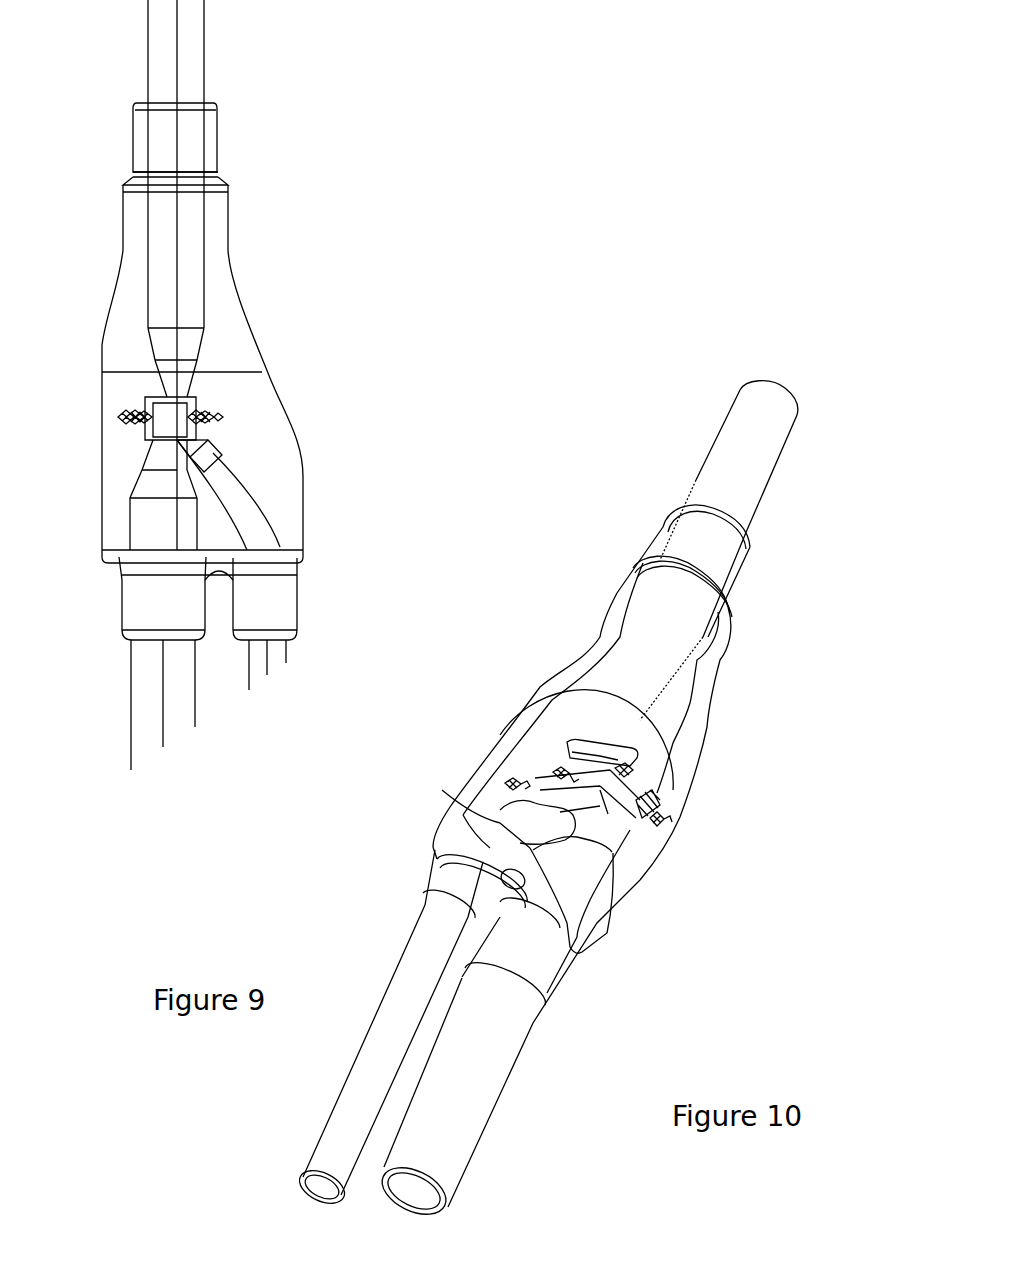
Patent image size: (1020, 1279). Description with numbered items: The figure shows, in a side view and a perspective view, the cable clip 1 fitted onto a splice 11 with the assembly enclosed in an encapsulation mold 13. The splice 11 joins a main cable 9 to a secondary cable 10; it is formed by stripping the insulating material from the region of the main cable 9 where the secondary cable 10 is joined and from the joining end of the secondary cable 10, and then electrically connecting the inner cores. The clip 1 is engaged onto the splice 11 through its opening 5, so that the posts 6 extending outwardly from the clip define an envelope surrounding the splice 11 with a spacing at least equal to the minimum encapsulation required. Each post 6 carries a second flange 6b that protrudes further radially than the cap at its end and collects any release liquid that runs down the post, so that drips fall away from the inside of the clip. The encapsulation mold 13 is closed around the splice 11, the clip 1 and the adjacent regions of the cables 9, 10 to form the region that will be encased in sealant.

In FIG. 9, the cable clip 1 is at (182, 405).
In FIG. 10, the cable clip 1 is at (667, 797).
In FIG. 10, the opening 5 is at (643, 807).
In FIG. 9, the post 6 is at (130, 407).
In FIG. 10, the post 6 is at (527, 793).
In FIG. 10, the second flange 6b is at (665, 815).
In FIG. 9, the main cable 9 is at (195, 225).
In FIG. 10, the main cable 9 is at (680, 610).
In FIG. 9, the secondary cable 10 is at (257, 524).
In FIG. 10, the secondary cable 10 is at (430, 955).
In FIG. 10, the splice 11 is at (605, 810).
In FIG. 9, the encapsulation mold 13 is at (305, 447).
In FIG. 10, the encapsulation mold 13 is at (717, 686).